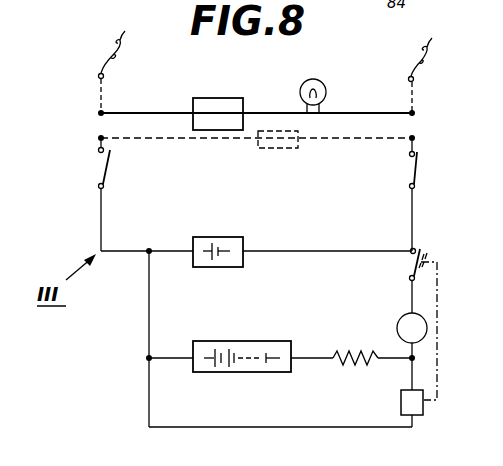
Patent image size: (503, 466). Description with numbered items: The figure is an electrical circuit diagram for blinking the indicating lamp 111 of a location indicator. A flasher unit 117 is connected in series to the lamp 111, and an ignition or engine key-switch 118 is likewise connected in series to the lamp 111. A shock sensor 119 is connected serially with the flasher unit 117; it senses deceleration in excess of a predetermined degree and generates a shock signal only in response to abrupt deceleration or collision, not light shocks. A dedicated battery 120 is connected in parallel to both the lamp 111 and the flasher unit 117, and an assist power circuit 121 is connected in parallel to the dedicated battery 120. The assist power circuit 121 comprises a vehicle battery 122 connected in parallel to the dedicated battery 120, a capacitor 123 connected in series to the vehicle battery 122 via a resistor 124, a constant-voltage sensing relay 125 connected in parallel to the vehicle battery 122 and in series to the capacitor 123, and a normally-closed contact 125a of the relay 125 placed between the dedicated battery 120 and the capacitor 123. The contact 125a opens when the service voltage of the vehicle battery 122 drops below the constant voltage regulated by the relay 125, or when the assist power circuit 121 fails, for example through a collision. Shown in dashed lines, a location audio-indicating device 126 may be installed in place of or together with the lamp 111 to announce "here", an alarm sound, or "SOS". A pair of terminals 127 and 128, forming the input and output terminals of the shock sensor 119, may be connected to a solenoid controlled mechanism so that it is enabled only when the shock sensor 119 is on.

The lamp 111 is at (321, 82).
The flasher unit 117 is at (220, 98).
The ignition or engine key-switch 118 is at (420, 163).
The shock sensor 119 is at (110, 166).
The dedicated battery 120 is at (220, 237).
The assist power circuit 121 is at (136, 379).
The vehicle battery 122 is at (245, 341).
The capacitor 123 is at (398, 317).
The resistor 124 is at (353, 366).
The constant-voltage sensing relay 125 is at (418, 408).
The normally-closed contact 125a is at (408, 264).
The location audio-indicating device 126 is at (283, 150).
The terminal 127 is at (415, 79).
The terminal 128 is at (98, 75).